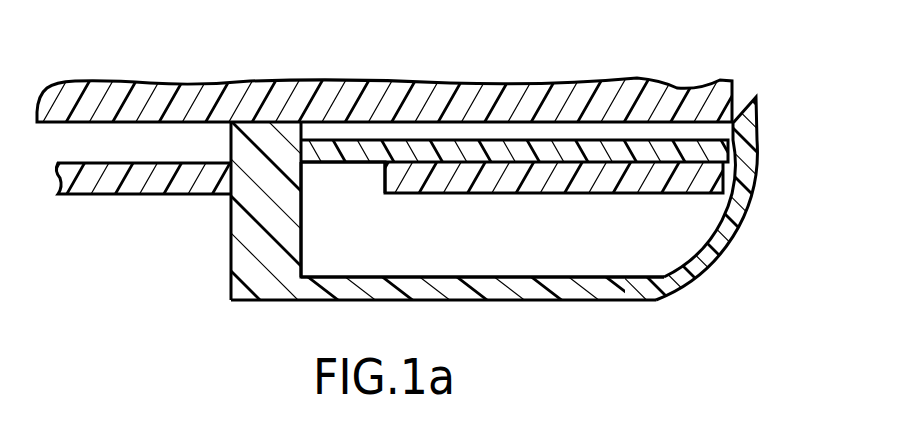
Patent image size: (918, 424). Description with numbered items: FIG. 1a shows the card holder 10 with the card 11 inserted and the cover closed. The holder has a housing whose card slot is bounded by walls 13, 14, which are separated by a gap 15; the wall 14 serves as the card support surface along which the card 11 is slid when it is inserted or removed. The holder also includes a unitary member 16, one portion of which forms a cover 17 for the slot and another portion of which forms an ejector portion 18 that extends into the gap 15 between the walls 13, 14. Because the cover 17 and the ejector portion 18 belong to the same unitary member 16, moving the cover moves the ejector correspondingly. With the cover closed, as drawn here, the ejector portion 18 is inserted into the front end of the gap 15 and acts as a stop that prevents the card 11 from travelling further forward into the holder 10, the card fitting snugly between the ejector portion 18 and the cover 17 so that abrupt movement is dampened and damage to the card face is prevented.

The card holder 10 is at (691, 66).
The card 11 is at (348, 147).
The wall 13 is at (152, 189).
The wall 14 is at (500, 187).
The gap 15 is at (333, 195).
The unitary member 16 is at (500, 324).
The cover 17 is at (728, 228).
The ejector portion 18 is at (262, 132).